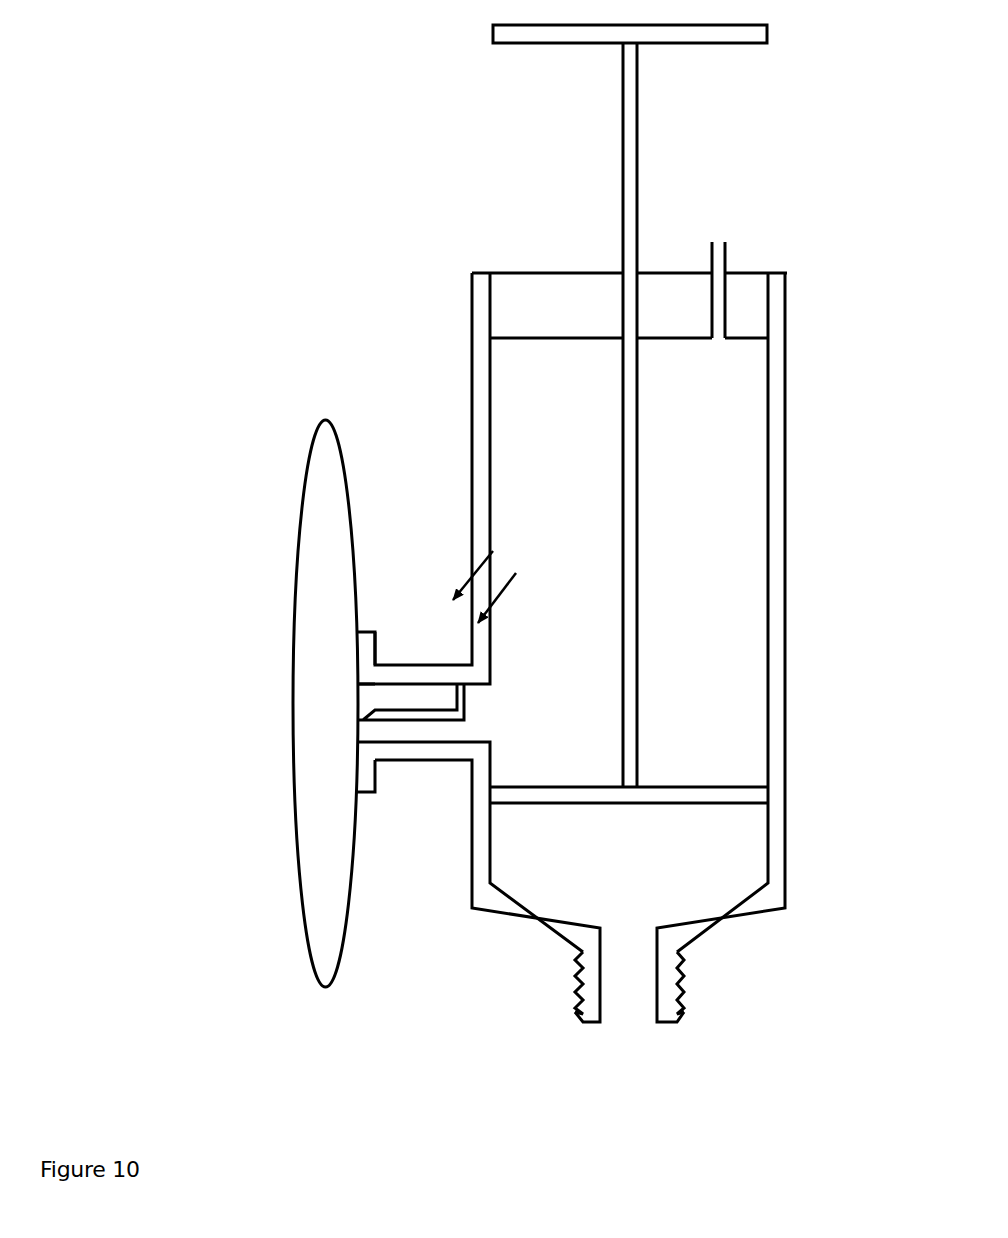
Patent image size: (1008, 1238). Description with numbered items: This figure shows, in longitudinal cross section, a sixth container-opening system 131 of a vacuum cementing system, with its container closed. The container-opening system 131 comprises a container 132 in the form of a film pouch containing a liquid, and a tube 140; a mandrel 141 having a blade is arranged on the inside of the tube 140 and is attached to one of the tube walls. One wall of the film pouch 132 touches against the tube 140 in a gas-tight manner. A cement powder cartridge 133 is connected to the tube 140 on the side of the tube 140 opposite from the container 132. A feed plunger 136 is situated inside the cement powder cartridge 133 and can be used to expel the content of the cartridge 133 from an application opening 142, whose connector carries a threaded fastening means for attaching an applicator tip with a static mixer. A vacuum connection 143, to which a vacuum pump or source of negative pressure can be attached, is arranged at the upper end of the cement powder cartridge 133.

The container-opening system 131 is at (344, 241).
The container 132 is at (319, 584).
The cement powder cartridge 133 is at (700, 543).
The feed plunger 136 is at (631, 456).
The tube 140 is at (398, 673).
The mandrel 141 is at (395, 717).
The application opening 142 is at (618, 987).
The vacuum connection 143 is at (718, 262).